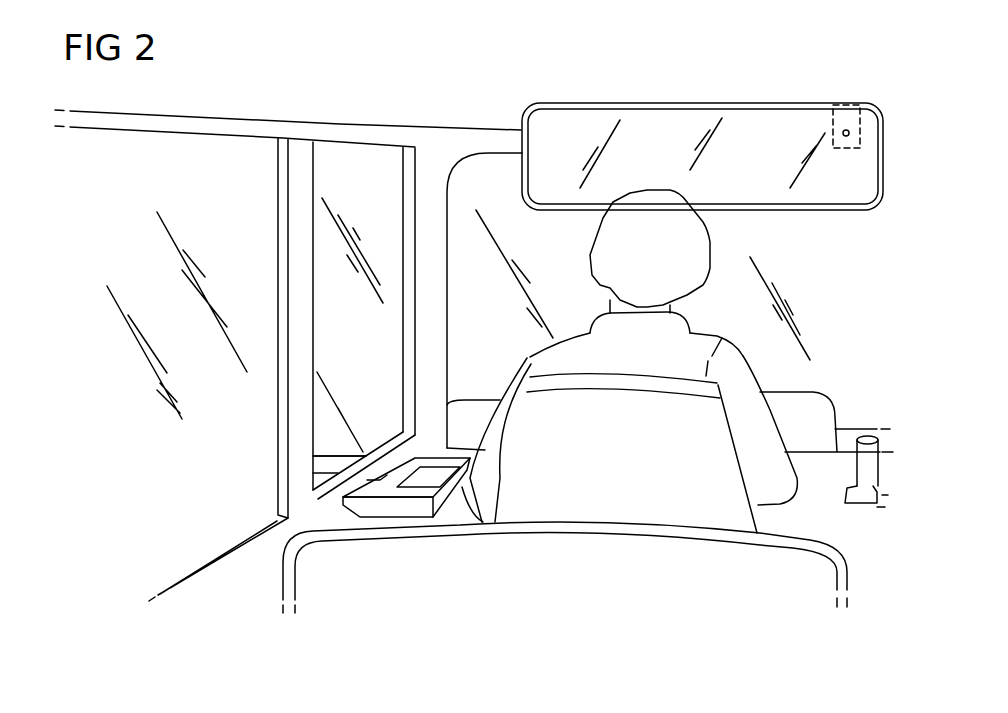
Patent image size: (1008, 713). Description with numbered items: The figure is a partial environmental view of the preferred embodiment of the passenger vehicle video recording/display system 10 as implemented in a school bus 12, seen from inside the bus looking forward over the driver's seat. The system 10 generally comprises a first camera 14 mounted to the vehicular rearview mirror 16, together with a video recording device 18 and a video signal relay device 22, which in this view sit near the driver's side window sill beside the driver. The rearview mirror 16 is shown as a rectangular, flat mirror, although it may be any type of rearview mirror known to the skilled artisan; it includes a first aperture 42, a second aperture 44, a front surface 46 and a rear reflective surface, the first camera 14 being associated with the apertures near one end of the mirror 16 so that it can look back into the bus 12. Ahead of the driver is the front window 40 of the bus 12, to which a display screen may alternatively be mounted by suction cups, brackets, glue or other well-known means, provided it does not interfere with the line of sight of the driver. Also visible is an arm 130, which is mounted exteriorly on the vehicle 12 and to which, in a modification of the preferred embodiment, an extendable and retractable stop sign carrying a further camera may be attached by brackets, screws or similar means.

The passenger vehicle video recording/display system 10 is at (709, 139).
The school bus 12 is at (263, 110).
The first camera 14 is at (851, 108).
The rearview mirror 16 is at (597, 93).
The video recording device 18 is at (366, 502).
The video signal relay device 22 is at (350, 483).
The front window 40 is at (468, 215).
The first aperture 42 is at (845, 150).
The second aperture 44 is at (844, 108).
The front surface 46 is at (678, 144).
The arm 130 is at (348, 457).